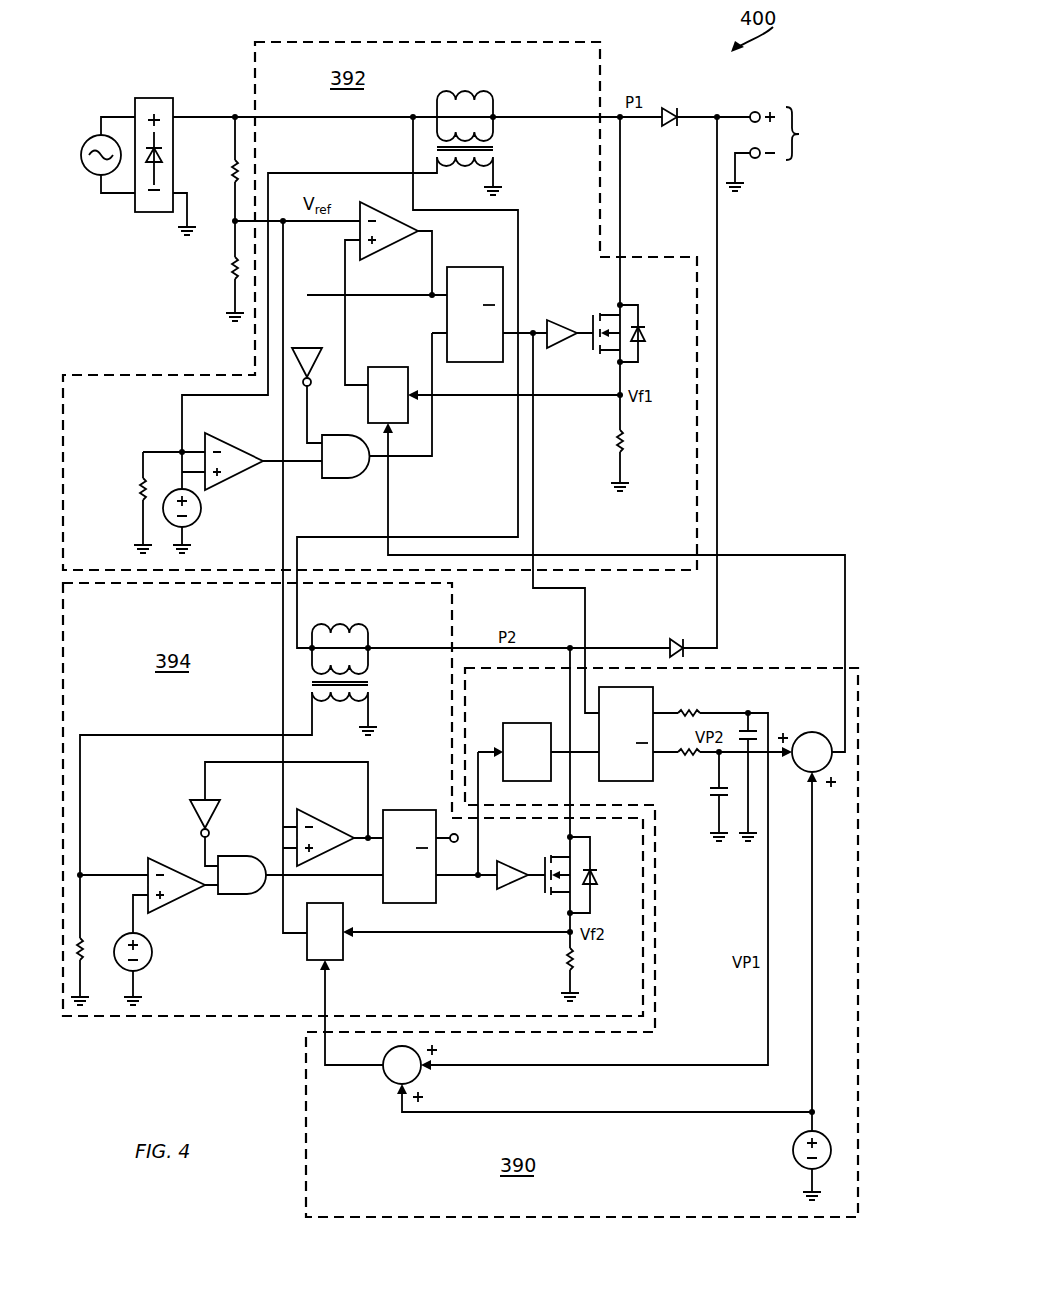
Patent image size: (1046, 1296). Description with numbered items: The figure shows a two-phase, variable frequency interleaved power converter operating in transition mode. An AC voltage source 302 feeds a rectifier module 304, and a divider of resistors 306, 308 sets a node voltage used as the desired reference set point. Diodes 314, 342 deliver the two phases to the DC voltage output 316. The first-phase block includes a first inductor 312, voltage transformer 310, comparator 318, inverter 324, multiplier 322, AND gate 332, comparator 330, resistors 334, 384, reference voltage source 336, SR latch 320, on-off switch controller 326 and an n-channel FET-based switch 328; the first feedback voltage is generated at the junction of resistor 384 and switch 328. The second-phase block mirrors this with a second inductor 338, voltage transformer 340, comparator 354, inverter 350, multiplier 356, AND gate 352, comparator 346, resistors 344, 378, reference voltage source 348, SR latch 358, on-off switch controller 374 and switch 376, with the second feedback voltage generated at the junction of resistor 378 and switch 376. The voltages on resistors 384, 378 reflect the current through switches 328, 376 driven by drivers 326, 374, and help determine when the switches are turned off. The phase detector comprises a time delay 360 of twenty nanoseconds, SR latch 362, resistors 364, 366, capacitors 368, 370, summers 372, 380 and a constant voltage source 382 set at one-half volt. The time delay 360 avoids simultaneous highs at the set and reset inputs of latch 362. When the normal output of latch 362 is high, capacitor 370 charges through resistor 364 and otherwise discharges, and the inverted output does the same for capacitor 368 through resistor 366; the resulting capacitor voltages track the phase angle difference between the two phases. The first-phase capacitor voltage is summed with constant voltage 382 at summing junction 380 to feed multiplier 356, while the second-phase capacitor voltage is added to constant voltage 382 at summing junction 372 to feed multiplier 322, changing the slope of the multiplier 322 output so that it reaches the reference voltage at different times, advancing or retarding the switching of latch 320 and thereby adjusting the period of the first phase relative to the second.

The AC voltage source 302 is at (84, 144).
The rectifier module 304 is at (148, 98).
The resistor 306 is at (232, 168).
The resistor 308 is at (232, 272).
The voltage transformer 310 is at (497, 148).
The inductor 312 is at (480, 92).
The diode 314 is at (676, 109).
The DC voltage output 316 is at (782, 145).
The comparator 318 is at (389, 247).
The SR latch 320 is at (475, 266).
The multiplier 322 is at (391, 366).
The inverter 324 is at (318, 364).
The on-off switch controller 326 is at (562, 348).
The FET (n-channel)-based switch 328 is at (592, 318).
The comparator 330 is at (237, 441).
The AND gate 332 is at (345, 480).
The resistor 334 is at (138, 493).
The reference voltage source 336 is at (205, 508).
The inductor 338 is at (356, 624).
The voltage transformer 340 is at (372, 682).
The diode 342 is at (683, 645).
The resistor 344 is at (91, 948).
The comparator 346 is at (176, 902).
The reference voltage source 348 is at (152, 958).
The inverter 350 is at (192, 815).
The AND gate 352 is at (238, 855).
The comparator 354 is at (330, 826).
The multiplier 356 is at (305, 950).
The SR latch 358 is at (410, 810).
The time delay 360 is at (527, 722).
The SR latch 362 is at (625, 687).
The resistor 364 is at (692, 710).
The resistor 366 is at (689, 759).
The capacitor 368 is at (710, 792).
The capacitor 370 is at (732, 733).
The summer 372 is at (800, 734).
The on-off switch controller 374 is at (515, 887).
The FET (n-channel)-based switch 376 is at (542, 858).
The resistor 378 is at (565, 963).
The summer 380 is at (383, 1077).
The constant voltage source 382 is at (793, 1148).
The resistor 384 is at (614, 440).